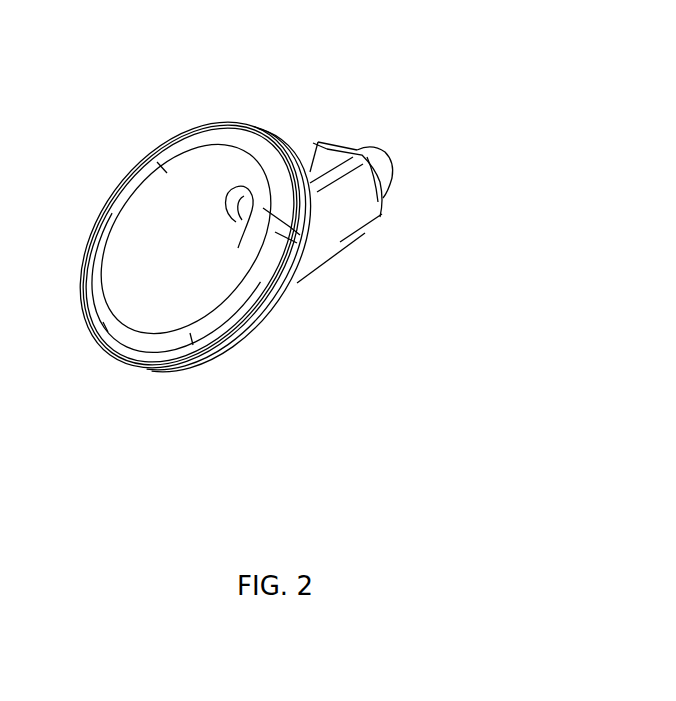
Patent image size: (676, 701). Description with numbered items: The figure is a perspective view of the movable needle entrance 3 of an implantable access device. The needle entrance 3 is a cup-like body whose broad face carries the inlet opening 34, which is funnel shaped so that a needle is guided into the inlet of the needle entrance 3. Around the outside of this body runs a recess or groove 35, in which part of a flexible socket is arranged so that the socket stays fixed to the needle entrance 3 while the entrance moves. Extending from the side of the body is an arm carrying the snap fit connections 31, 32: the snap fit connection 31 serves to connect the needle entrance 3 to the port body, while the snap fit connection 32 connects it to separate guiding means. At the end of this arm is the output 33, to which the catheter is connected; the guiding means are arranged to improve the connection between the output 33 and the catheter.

The movable needle entrance 3 is at (211, 110).
The snap fit connection 31 is at (318, 142).
The snap fit connection 32 is at (361, 243).
The output 33 is at (393, 167).
The inlet opening 34 is at (183, 273).
The recess/groove 35 is at (205, 352).